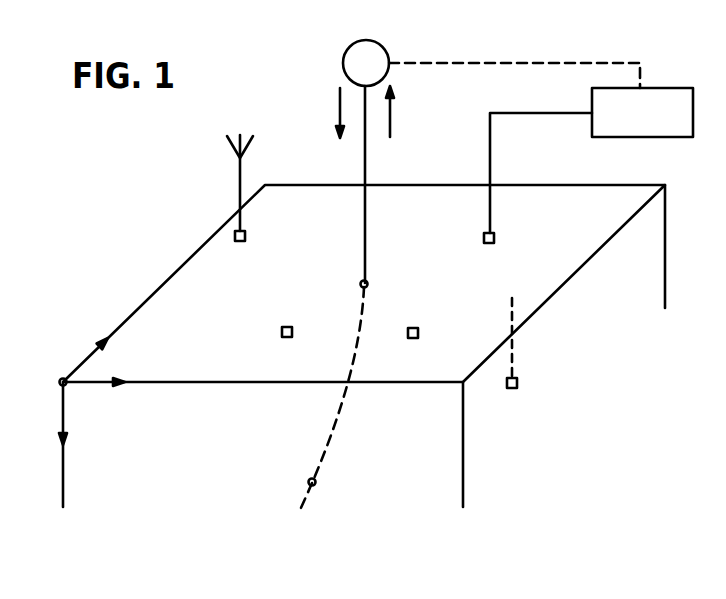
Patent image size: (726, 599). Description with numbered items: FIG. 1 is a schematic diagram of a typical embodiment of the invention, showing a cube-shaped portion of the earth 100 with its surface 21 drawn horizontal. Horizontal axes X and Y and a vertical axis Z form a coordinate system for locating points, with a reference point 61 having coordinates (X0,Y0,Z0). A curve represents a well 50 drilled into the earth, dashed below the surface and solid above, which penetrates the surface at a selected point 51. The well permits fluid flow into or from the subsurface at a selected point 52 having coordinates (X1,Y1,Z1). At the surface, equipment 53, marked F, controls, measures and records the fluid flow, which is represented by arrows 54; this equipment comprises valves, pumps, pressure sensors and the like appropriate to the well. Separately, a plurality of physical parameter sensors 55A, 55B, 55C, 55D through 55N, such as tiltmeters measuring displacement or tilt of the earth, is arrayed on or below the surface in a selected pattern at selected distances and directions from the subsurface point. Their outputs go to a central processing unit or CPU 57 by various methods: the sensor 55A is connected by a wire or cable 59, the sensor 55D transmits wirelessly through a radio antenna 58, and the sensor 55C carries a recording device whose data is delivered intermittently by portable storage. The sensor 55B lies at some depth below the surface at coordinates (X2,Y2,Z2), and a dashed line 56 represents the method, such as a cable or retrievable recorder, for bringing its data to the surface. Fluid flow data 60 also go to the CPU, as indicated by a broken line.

The surface of the earth 21 is at (193, 277).
The well 50 is at (330, 435).
The intersection of the well and the surface of the earth 51 is at (361, 283).
The point at the well in the subsurface 52 is at (402, 522).
The equipment for controlling and/or measuring fluid flow 53 is at (342, 63).
The fluid flow 54 is at (390, 125).
The sensor 55A is at (495, 237).
The sensor 55B is at (662, 420).
The sensor 55C is at (418, 335).
The sensor 55D is at (245, 232).
The sensor 55N is at (283, 330).
The method for acquiring data from a sub-surface sensor 56 is at (512, 343).
The central processing unit 57 is at (633, 137).
The radio antenna 58 is at (238, 200).
The wire or cable 59 is at (490, 143).
The fluid flow data 60 is at (490, 62).
The reference point for coordinates 61 is at (200, 420).
The earth 100 is at (150, 518).